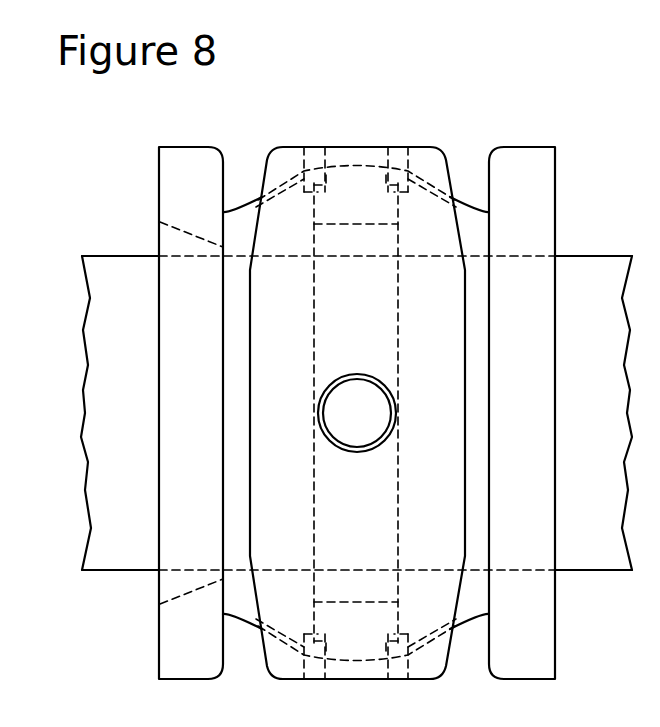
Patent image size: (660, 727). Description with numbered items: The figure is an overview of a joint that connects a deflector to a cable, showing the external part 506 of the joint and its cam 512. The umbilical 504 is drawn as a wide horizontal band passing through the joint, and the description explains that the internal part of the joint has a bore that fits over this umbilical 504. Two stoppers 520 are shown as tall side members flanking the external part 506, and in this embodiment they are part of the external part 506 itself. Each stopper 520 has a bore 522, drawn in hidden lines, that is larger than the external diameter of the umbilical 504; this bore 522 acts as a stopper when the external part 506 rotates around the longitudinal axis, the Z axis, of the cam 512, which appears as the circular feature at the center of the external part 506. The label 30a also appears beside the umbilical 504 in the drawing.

The external part 506 is at (378, 135).
The stoppers 520 is at (177, 172).
The bore 522 is at (188, 233).
The cam 512 is at (360, 407).
The seat back frame 30a is at (22, 409).
The umbilical 504 is at (122, 490).